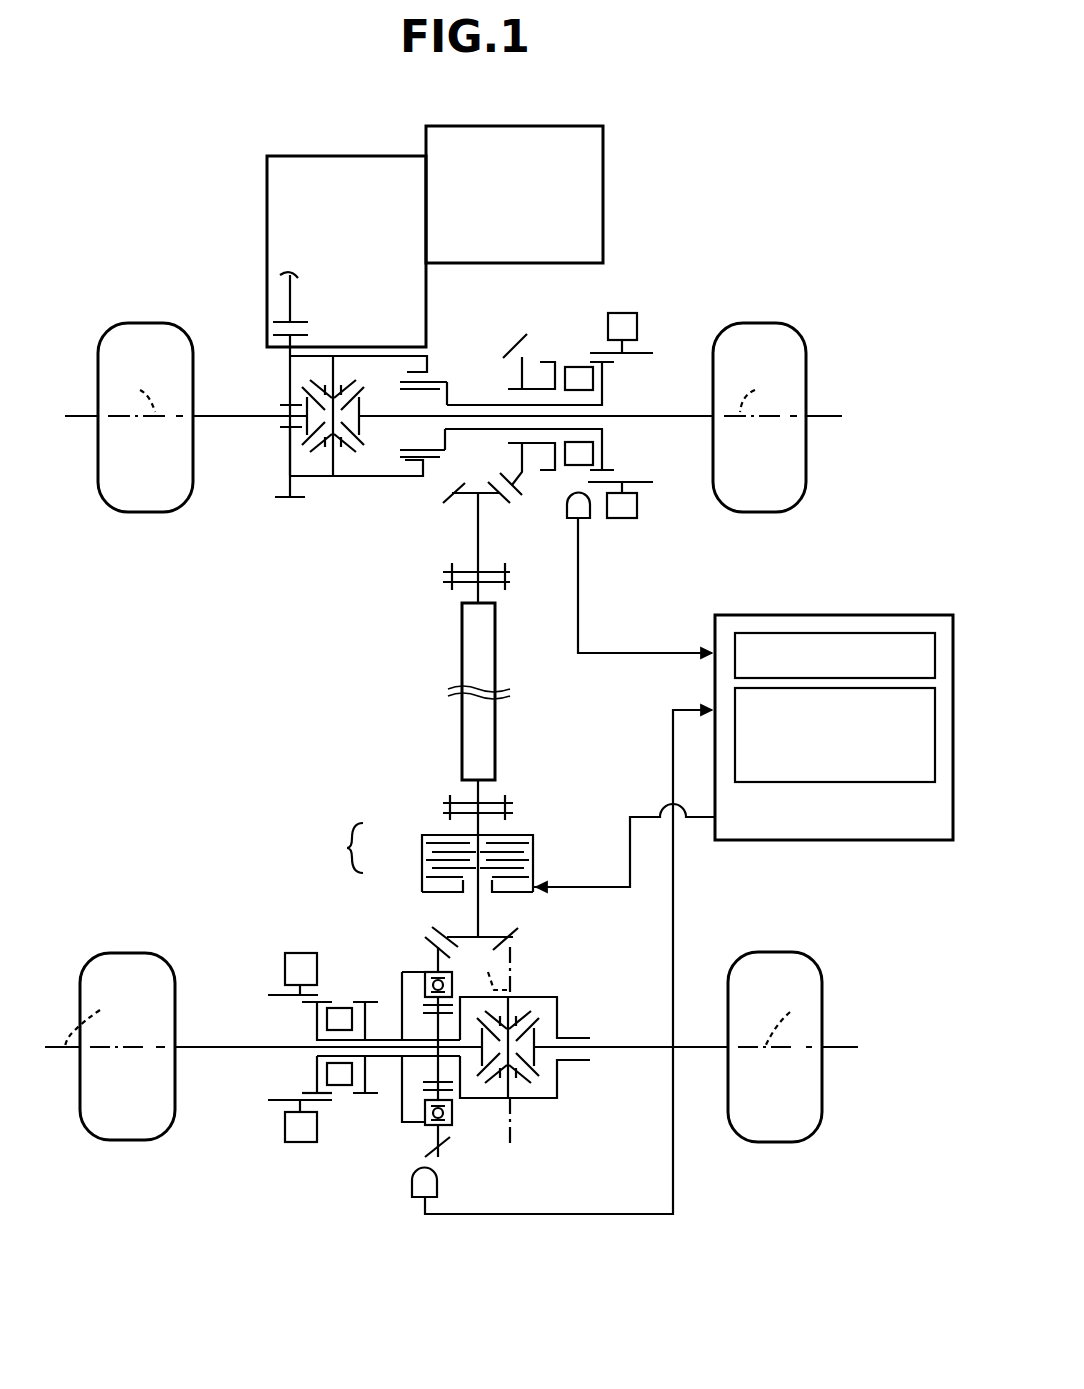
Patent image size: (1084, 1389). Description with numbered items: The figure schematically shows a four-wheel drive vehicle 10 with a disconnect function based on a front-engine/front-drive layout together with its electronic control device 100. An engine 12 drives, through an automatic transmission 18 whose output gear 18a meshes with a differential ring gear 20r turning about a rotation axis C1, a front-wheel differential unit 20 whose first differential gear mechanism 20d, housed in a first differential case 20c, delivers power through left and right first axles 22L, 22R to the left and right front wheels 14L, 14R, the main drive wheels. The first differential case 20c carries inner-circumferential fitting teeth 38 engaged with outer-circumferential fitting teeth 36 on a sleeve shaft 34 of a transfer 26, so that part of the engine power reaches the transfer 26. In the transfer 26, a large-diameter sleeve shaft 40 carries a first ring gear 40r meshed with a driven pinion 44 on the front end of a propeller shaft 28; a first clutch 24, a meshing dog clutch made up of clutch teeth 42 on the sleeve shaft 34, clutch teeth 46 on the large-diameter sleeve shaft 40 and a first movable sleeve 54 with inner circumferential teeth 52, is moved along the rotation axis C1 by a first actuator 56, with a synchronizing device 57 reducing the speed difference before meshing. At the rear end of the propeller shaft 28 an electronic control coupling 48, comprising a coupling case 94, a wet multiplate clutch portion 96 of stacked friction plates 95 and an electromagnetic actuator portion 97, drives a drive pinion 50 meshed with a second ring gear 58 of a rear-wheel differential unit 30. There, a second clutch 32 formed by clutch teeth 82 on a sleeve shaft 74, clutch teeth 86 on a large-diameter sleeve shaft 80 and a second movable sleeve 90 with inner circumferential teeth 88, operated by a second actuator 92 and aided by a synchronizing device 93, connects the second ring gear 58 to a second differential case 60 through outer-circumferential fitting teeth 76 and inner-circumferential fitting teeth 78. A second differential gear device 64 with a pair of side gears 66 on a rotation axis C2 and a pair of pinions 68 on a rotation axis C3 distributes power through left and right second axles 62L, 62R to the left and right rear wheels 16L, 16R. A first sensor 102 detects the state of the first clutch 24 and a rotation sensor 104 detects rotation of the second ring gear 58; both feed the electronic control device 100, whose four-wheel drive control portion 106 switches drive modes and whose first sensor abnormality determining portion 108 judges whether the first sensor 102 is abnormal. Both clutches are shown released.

The four-wheel drive vehicle 10 is at (704, 170).
The engine 12 is at (502, 140).
The left front wheel 14L is at (138, 338).
The right front wheel 14R is at (755, 340).
The left rear wheel 16L is at (117, 966).
The right rear wheel 16R is at (770, 964).
The automatic transmission 18 is at (340, 178).
The output gear 18a is at (300, 313).
The front-wheel differential unit 20 is at (341, 510).
The first differential case 20c is at (360, 477).
The first differential gear mechanism 20d is at (320, 386).
The differential ring gear 20r is at (282, 499).
The left first axle 22L is at (231, 419).
The right first axle 22R is at (677, 419).
The first clutch 24 is at (565, 485).
The transfer 26 is at (446, 540).
The propeller shaft 28 is at (483, 670).
The rear-wheel differential unit 30 is at (320, 905).
The second clutch 32 is at (345, 1163).
The sleeve shaft 34 is at (473, 401).
The outer-circumferential fitting teeth 36 is at (408, 382).
The inner-circumferential fitting teeth 38 is at (447, 377).
The large-diameter sleeve shaft 40 is at (528, 384).
The first ring gear 40r is at (503, 357).
The clutch teeth 42 is at (602, 362).
The driven pinion 44 is at (455, 492).
The clutch teeth 46 is at (553, 361).
The electronic control coupling 48 is at (560, 862).
The drive pinion 50 is at (516, 930).
The inner circumferential teeth 52 is at (613, 358).
The first movable sleeve 54 is at (648, 350).
The first actuator 56 is at (625, 320).
The synchronizing device 57 is at (580, 367).
The second ring gear 58 is at (432, 927).
The second differential case 60 is at (498, 1100).
The left second axle 62L is at (185, 1046).
The right second axle 62R is at (630, 1045).
The second differential gear device 64 is at (538, 985).
The side gears 66 is at (541, 1017).
The pinions 68 is at (456, 1116).
The sleeve shaft 74 is at (322, 1040).
The outer-circumferential fitting teeth 76 is at (422, 1005).
The inner-circumferential fitting teeth 78 is at (416, 998).
The large-diameter sleeve shaft 80 is at (387, 1068).
The clutch teeth 82 is at (312, 1092).
The clutch teeth 86 is at (360, 1099).
The inner circumferential teeth 88 is at (282, 1100).
The second movable sleeve 90 is at (290, 1106).
The second actuator 92 is at (292, 966).
The synchronizing device 93 is at (342, 1014).
The coupling case 94 is at (527, 835).
The friction plates 95 is at (442, 840).
The wet multiplate clutch portion 96 is at (347, 848).
The electromagnetic actuator portion 97 is at (512, 887).
The electronic control device 100 is at (745, 618).
The first sensor 102 is at (582, 515).
The rotation sensor 104 is at (417, 1188).
The four-wheel drive control portion 106 is at (860, 634).
The first sensor abnormality determining portion 108 is at (865, 778).
The rotation axis C1 is at (448, 394).
The rotation axis C2 is at (432, 1017).
The rotation axis C3 is at (487, 969).